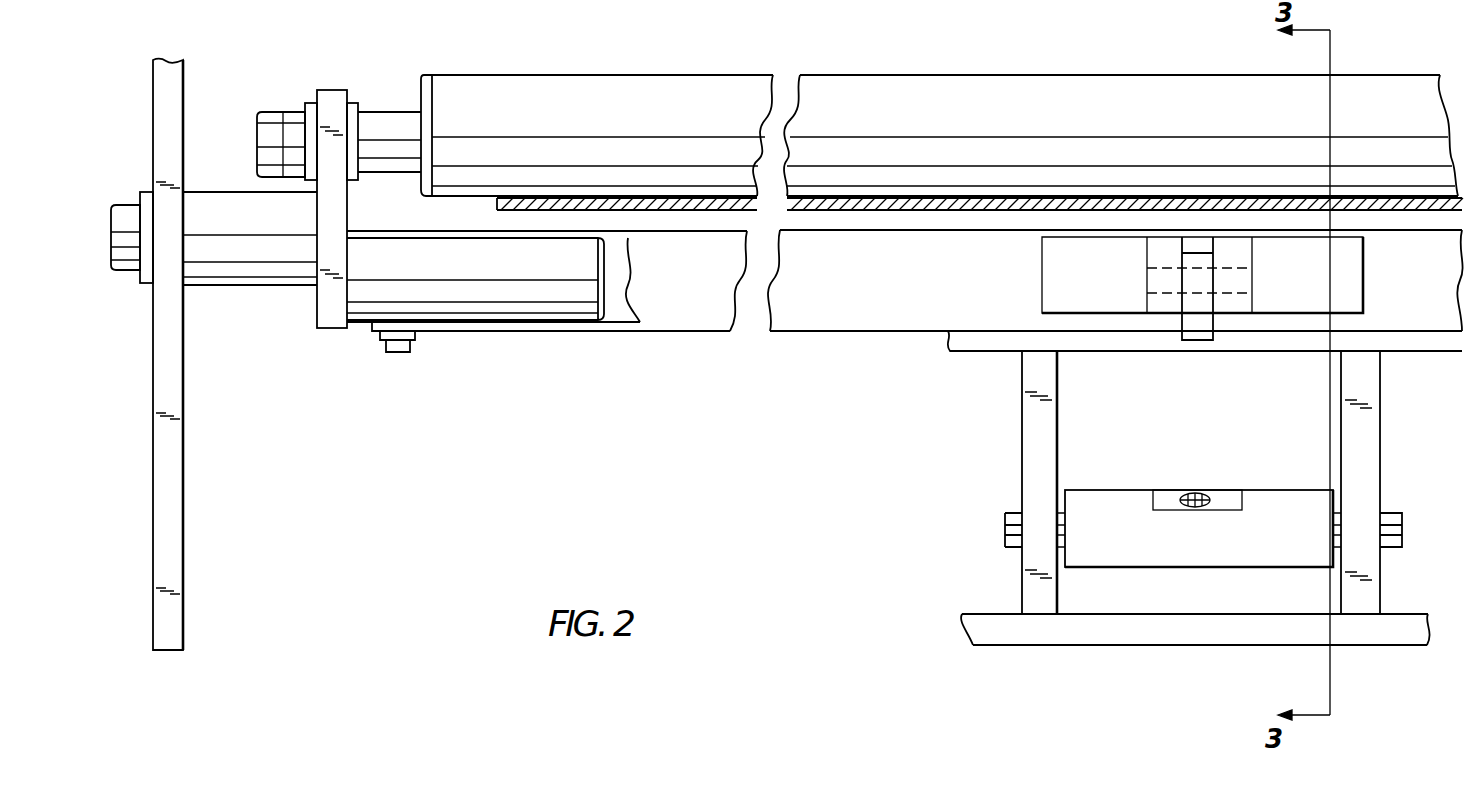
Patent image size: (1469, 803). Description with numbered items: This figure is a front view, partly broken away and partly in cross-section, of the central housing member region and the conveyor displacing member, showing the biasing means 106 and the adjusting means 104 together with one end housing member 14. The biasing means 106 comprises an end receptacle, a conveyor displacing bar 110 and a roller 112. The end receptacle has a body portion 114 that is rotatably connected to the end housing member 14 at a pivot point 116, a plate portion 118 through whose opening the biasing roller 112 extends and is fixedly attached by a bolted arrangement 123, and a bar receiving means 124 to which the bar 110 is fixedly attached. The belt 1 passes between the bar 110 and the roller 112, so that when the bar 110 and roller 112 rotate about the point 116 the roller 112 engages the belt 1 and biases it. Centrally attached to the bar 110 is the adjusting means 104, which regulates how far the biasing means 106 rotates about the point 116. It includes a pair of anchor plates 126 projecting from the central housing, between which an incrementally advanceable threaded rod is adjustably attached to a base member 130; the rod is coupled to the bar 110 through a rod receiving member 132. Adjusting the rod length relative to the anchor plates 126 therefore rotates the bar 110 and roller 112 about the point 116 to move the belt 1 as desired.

The belt 1 is at (938, 208).
The end housing member 14 is at (177, 494).
The adjusting means 104 is at (1203, 548).
The biasing means 106 is at (262, 107).
The conveyor displacing member or bar 110 is at (828, 318).
The roller 112 is at (575, 87).
The body portion 114 is at (256, 275).
The point 116 is at (152, 258).
The plate portion 118 is at (333, 97).
The bolted arrangement 123 is at (294, 112).
The bar receiving means 124 is at (498, 312).
The anchor plates 126 is at (1030, 434).
The base member 130 is at (1233, 555).
The rod receiving member 132 is at (1210, 328).